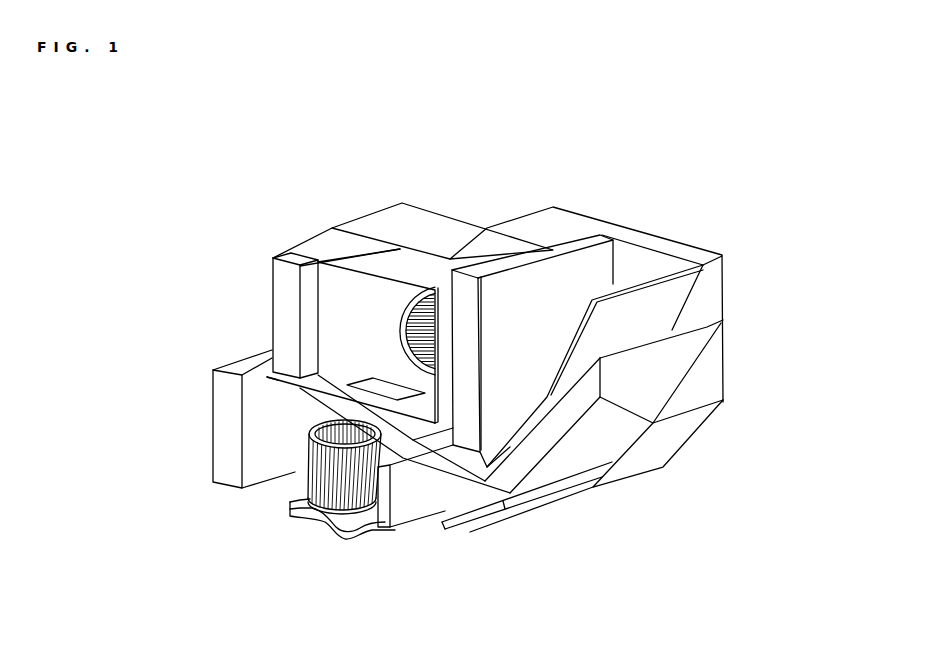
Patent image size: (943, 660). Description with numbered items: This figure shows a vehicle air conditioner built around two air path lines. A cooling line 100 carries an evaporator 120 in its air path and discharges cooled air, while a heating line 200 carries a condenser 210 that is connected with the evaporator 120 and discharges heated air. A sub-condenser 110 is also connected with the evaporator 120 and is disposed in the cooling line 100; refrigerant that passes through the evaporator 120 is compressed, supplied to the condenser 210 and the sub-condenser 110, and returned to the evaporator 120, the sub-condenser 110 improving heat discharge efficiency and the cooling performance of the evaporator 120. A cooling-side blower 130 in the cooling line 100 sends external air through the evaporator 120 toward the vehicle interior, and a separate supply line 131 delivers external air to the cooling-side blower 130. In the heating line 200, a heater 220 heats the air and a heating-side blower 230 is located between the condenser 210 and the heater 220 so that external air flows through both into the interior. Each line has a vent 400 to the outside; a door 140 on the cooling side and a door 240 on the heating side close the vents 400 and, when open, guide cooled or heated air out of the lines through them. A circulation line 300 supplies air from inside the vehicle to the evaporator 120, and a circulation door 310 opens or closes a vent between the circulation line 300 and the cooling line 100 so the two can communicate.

The cooling line 100 is at (410, 272).
The sub-condenser 110 is at (302, 262).
The evaporator 120 is at (567, 290).
The cooling-side blower 130 is at (413, 313).
The supply line 131 is at (370, 348).
The door 140 is at (663, 302).
The heating line 200 is at (295, 482).
The condenser 210 is at (227, 460).
The heater 220 is at (412, 503).
The heating-side blower 230 is at (357, 480).
The door 240 is at (470, 520).
The circulation line 300 is at (640, 352).
The circulation door 310 is at (362, 380).
The vent 400 is at (625, 258).